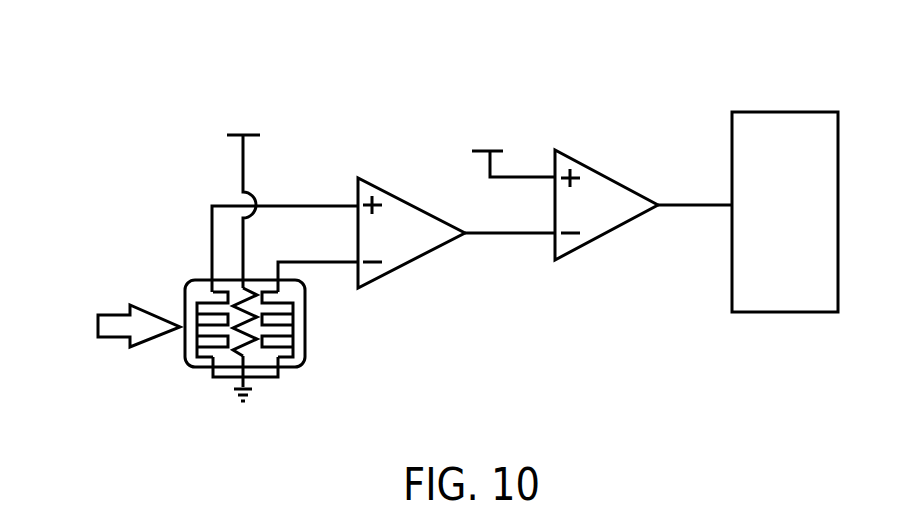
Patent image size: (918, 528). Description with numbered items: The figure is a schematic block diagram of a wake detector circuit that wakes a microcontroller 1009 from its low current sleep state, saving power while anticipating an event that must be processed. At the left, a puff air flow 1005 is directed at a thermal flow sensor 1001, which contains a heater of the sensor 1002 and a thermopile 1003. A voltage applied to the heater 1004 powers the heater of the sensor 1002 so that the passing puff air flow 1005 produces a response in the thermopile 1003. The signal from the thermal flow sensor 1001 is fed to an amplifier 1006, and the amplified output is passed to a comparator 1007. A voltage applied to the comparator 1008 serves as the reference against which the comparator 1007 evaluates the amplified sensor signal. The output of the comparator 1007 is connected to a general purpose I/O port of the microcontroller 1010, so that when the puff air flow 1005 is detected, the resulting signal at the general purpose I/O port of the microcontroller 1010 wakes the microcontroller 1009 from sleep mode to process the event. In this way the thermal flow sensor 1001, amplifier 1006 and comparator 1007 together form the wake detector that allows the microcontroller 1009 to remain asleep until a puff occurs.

The thermal flow sensor 1001 is at (257, 282).
The heater of the sensor 1002 is at (205, 300).
The thermopile 1003 is at (283, 340).
The voltage applied to the heater 1004 is at (242, 128).
The puff air flow 1005 is at (142, 300).
The amplifier 1006 is at (408, 273).
The comparator 1007 is at (490, 147).
The voltage applied to the comparator 1008 is at (598, 163).
The microcontroller 1009 is at (778, 220).
The general purpose I/O port of the microcontroller 1010 is at (722, 200).